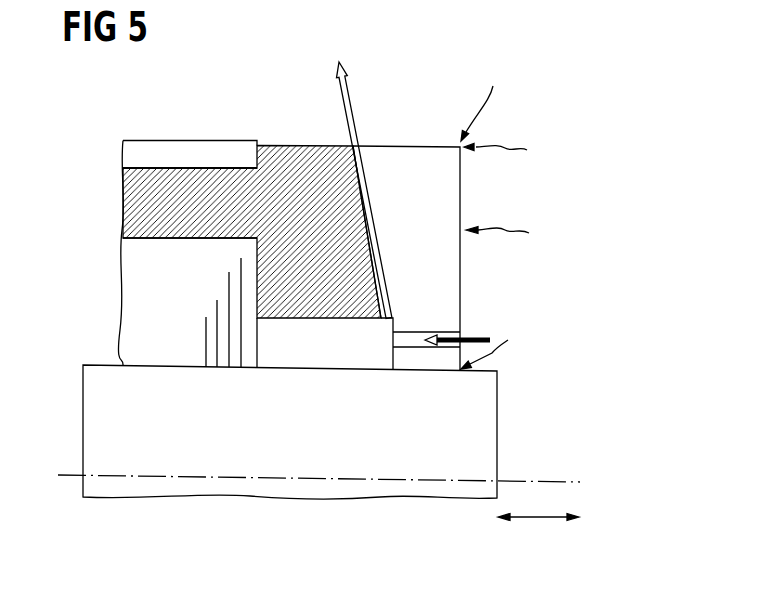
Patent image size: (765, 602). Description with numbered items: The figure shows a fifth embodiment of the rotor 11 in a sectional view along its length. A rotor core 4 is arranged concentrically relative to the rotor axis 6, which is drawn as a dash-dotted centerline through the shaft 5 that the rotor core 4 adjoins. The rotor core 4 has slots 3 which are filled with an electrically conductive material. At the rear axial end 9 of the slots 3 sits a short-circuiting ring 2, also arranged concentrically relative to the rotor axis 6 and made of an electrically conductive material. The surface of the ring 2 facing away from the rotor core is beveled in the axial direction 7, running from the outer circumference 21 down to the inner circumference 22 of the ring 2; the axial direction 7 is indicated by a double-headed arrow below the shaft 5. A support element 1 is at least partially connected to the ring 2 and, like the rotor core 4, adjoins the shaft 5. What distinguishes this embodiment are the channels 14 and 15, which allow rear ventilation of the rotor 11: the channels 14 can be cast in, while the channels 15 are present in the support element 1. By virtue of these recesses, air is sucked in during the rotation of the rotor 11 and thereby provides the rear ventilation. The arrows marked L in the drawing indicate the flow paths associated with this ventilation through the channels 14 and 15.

The support element 1 is at (430, 150).
The short-circuiting ring 2 is at (300, 147).
The slots 3 is at (140, 198).
The rotor core 4 is at (140, 150).
The shaft 5 is at (172, 490).
The rotor axis 6 is at (575, 481).
The axial direction 7 is at (537, 521).
The rear axial end 9 is at (482, 98).
The rotor 11 is at (514, 232).
The channels 14 is at (372, 212).
The channels 15 is at (415, 334).
The outer circumference 21 is at (512, 148).
The inner circumference 22 is at (498, 340).
The light beam L is at (348, 100).